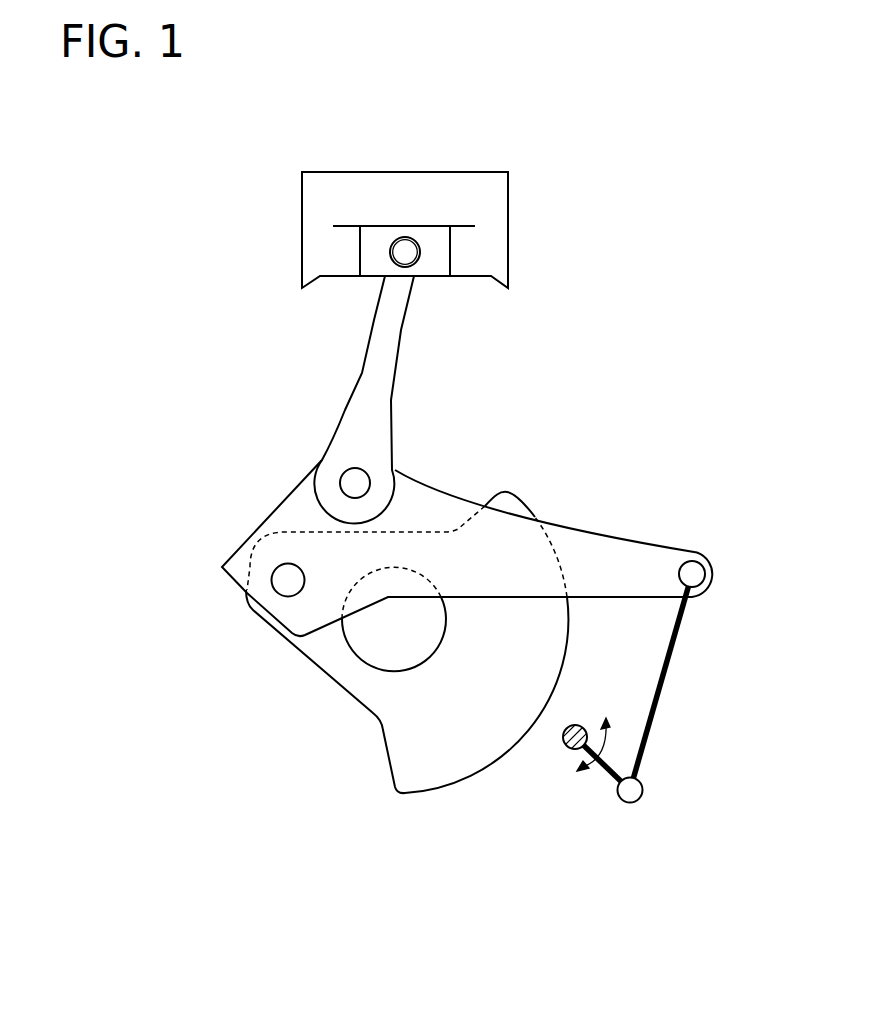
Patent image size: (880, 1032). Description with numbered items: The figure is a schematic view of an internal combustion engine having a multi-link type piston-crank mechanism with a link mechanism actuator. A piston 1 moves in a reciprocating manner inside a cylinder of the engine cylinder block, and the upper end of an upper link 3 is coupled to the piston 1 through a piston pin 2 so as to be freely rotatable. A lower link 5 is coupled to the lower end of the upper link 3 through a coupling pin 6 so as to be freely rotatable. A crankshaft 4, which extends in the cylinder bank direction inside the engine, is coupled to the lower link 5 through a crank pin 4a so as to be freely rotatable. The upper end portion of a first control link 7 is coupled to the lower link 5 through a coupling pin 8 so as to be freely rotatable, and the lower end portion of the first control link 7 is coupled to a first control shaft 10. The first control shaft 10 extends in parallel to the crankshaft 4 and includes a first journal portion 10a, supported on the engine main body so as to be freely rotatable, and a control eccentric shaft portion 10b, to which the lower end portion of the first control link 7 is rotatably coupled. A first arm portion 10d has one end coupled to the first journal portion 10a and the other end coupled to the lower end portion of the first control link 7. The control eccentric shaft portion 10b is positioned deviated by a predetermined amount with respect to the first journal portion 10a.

The piston 1 is at (508, 210).
The piston pin 2 is at (405, 247).
The upper link 3 is at (395, 326).
The crankshaft 4 is at (323, 670).
The crank pin 4a is at (283, 573).
The lower link 5 is at (423, 491).
The coupling pin 6 is at (353, 482).
The first control link 7 is at (675, 642).
The coupling pin 8 is at (688, 573).
The first control shaft 10 is at (574, 768).
The first journal portion 10a is at (563, 743).
The control eccentric shaft portion 10b is at (618, 795).
The first arm portion 10d is at (600, 770).